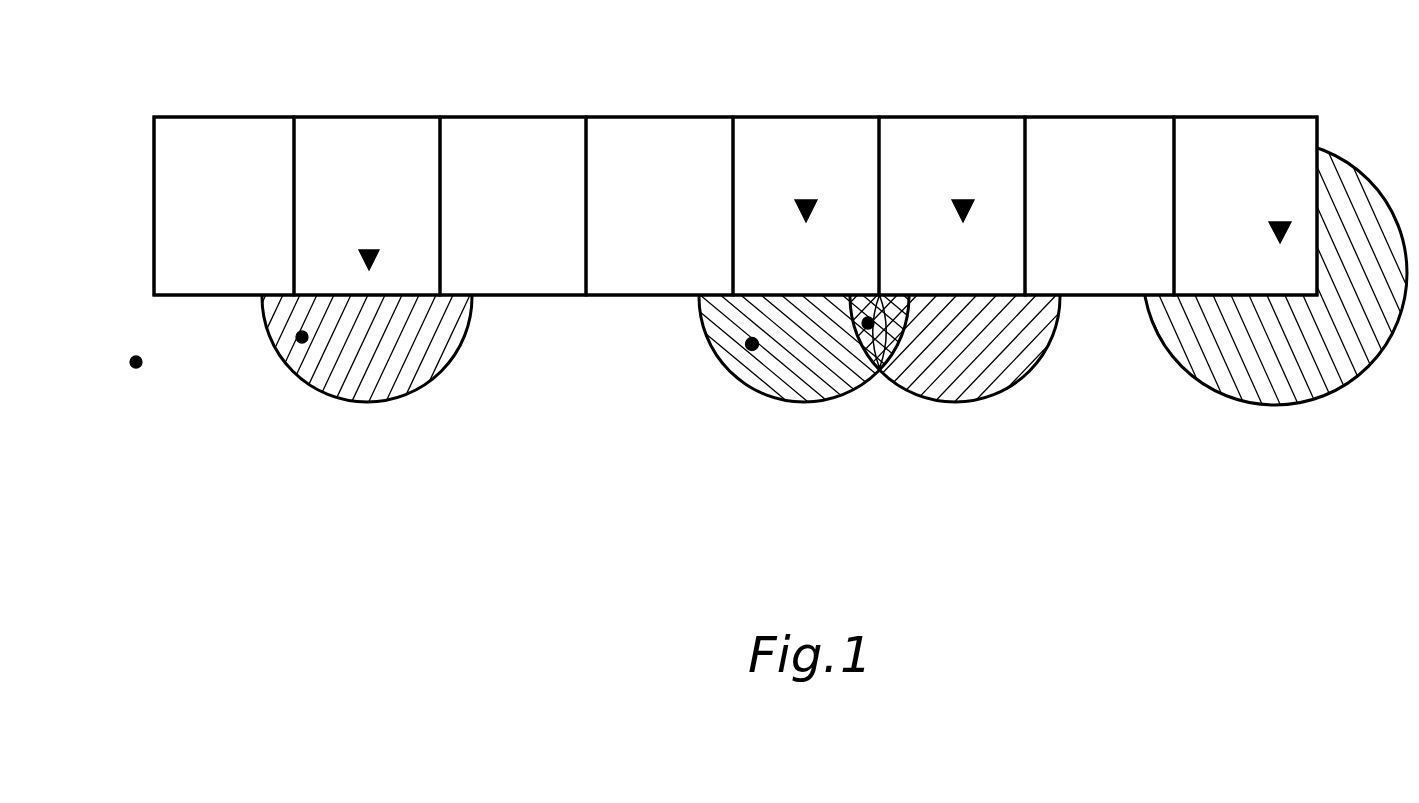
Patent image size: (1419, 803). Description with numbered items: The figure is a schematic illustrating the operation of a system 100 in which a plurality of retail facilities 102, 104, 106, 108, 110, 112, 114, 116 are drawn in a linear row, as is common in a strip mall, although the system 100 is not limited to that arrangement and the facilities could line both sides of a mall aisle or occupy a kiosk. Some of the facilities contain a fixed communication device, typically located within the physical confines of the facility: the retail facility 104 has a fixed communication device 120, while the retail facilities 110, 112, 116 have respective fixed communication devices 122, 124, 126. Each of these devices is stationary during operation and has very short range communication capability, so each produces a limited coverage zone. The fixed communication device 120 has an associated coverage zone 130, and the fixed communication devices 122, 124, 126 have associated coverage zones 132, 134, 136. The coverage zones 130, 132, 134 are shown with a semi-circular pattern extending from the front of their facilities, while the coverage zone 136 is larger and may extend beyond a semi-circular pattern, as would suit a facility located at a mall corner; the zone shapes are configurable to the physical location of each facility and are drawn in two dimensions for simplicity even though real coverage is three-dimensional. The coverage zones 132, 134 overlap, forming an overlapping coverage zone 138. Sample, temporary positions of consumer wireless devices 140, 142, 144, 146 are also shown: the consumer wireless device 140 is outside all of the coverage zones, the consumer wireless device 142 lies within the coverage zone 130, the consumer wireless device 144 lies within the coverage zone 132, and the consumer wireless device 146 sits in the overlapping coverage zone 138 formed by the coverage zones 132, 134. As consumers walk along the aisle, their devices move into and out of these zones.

The system 100 is at (268, 632).
The retail facility 102 is at (233, 117).
The retail facility 104 is at (370, 117).
The retail facility 106 is at (512, 117).
The retail facility 108 is at (653, 117).
The retail facility 110 is at (807, 117).
The retail facility 112 is at (952, 117).
The retail facility 114 is at (1105, 117).
The retail facility 116 is at (1228, 117).
The fixed communication device 120 is at (369, 252).
The fixed communication device 122 is at (806, 202).
The fixed communication device 124 is at (963, 202).
The fixed communication device 126 is at (1280, 224).
The coverage zone 130 is at (387, 401).
The coverage zone 132 is at (797, 400).
The coverage zone 134 is at (1022, 375).
The coverage zone 136 is at (1290, 405).
The overlapping coverage zone 138 is at (880, 368).
The consumer wireless device 140 is at (142, 364).
The consumer wireless device 142 is at (303, 342).
The consumer wireless device 144 is at (752, 350).
The consumer wireless device 146 is at (869, 330).